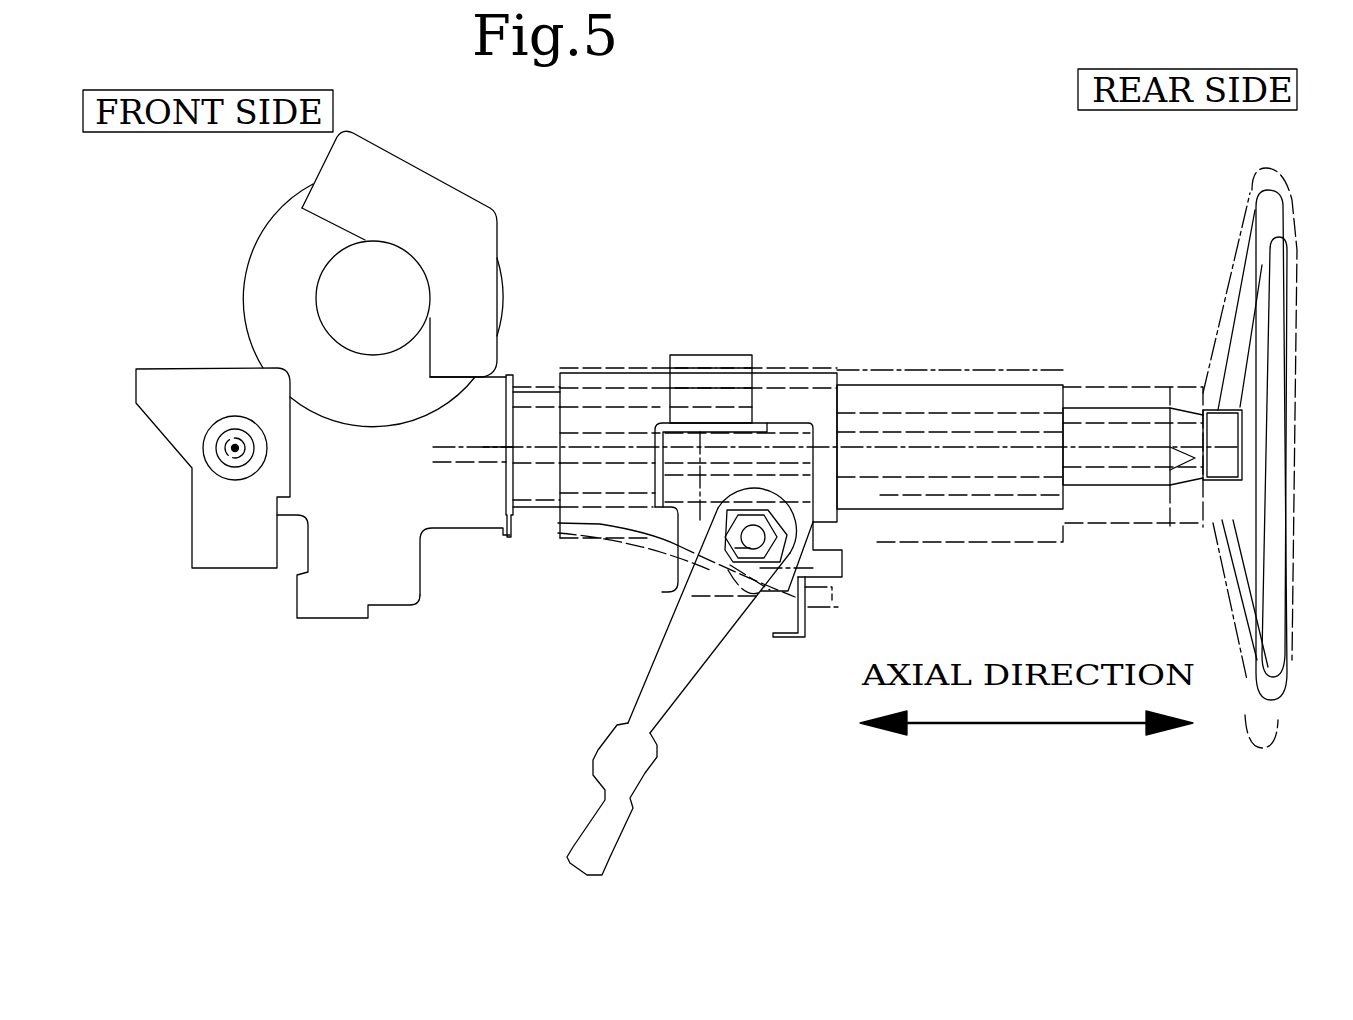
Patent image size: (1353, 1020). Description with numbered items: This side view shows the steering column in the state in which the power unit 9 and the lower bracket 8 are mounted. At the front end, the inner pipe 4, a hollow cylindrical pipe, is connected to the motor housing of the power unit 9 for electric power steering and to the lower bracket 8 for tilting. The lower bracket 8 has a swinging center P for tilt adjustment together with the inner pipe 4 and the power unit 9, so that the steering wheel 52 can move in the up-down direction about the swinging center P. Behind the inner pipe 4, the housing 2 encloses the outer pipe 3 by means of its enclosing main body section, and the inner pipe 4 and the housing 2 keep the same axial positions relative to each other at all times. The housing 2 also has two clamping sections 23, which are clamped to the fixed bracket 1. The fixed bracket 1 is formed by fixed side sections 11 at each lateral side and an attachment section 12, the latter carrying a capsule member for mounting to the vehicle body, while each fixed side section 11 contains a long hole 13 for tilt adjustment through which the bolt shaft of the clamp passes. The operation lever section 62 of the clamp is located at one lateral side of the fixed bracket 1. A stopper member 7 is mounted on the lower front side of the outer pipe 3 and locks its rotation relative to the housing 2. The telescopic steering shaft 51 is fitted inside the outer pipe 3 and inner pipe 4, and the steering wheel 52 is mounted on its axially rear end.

The fixed bracket 1 is at (820, 452).
The housing 2 is at (626, 366).
The outer pipe 3 is at (1025, 378).
The inner pipe 4 is at (532, 510).
The stopper member 7 is at (818, 621).
The lower bracket 8 is at (175, 368).
The power unit 9 is at (507, 293).
The fixed side sections 11 is at (762, 482).
The attachment section 12 is at (717, 420).
The long holes for tilt adjustment 13 is at (712, 572).
The clamping sections 23 is at (658, 515).
The steering shaft 51 is at (1137, 408).
The steering wheel 52 is at (1262, 217).
The operation lever section 62 is at (687, 653).
The swinging center P is at (243, 457).